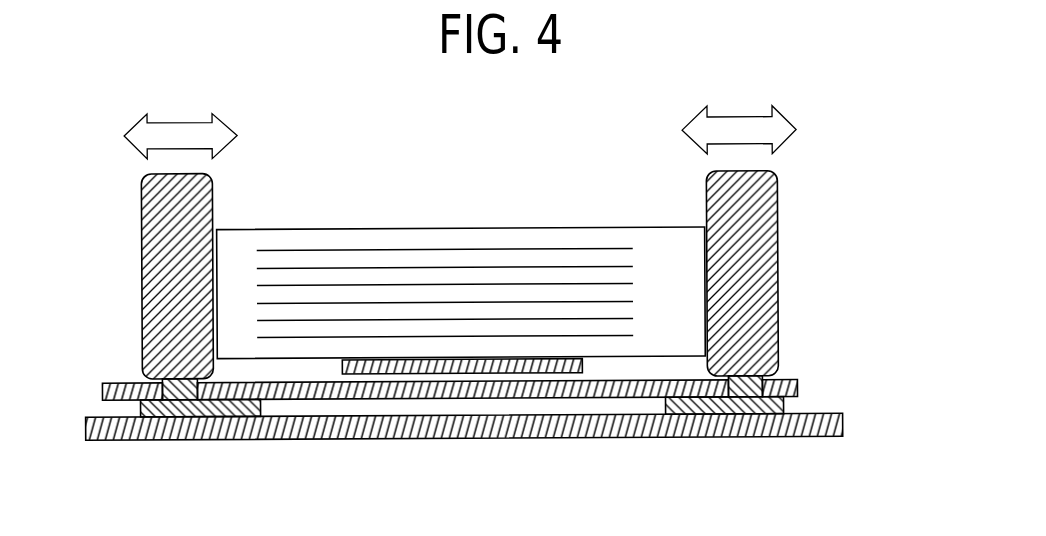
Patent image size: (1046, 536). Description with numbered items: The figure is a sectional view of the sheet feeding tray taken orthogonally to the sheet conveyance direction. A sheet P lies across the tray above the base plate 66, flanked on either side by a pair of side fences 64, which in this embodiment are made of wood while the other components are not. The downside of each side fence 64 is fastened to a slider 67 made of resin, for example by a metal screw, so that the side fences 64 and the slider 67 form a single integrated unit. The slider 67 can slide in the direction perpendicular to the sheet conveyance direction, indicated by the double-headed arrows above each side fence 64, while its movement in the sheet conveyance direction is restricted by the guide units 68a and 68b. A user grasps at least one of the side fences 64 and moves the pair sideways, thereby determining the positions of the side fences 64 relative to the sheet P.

The sheet P is at (488, 228).
The side fence 64 is at (142, 222).
The base plate 66 is at (342, 361).
The slider 67 is at (134, 413).
The guide unit 68a is at (797, 387).
The guide unit 68b is at (842, 421).